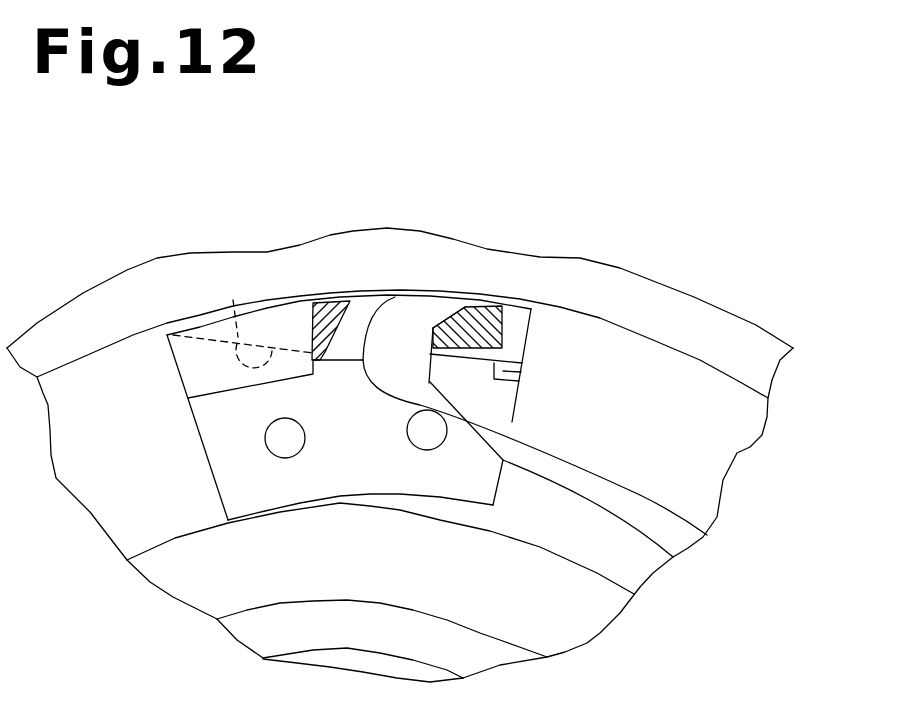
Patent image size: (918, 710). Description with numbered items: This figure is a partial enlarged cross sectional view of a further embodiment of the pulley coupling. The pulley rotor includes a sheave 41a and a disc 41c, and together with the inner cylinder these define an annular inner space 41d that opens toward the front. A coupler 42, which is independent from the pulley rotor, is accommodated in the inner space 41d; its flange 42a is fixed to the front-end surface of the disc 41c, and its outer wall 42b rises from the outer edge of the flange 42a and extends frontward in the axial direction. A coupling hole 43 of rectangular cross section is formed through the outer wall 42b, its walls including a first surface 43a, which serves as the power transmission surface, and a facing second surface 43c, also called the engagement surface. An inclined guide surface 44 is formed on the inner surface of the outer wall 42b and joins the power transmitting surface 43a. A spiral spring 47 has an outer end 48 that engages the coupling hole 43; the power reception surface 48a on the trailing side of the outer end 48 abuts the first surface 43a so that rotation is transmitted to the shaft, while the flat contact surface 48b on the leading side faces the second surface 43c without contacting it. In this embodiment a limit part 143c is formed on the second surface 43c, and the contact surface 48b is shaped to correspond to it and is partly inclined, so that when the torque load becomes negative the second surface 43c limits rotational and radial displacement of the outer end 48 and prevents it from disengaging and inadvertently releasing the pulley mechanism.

The sheave 41a is at (678, 320).
The disc 41c is at (745, 432).
The annular inner space 41d is at (709, 453).
The coupler 42 is at (438, 497).
The flange 42a is at (223, 443).
The outer wall 42b is at (197, 383).
The coupling hole 43 is at (374, 295).
The first surface 43a is at (348, 350).
The second surface 43c is at (429, 384).
The limit part 143c is at (443, 300).
The inclined guide surface 44 is at (233, 300).
The spiral spring 47 is at (607, 589).
The outer end 48 is at (393, 370).
The power reception surface 48a is at (298, 453).
The contact surface 48b is at (470, 322).